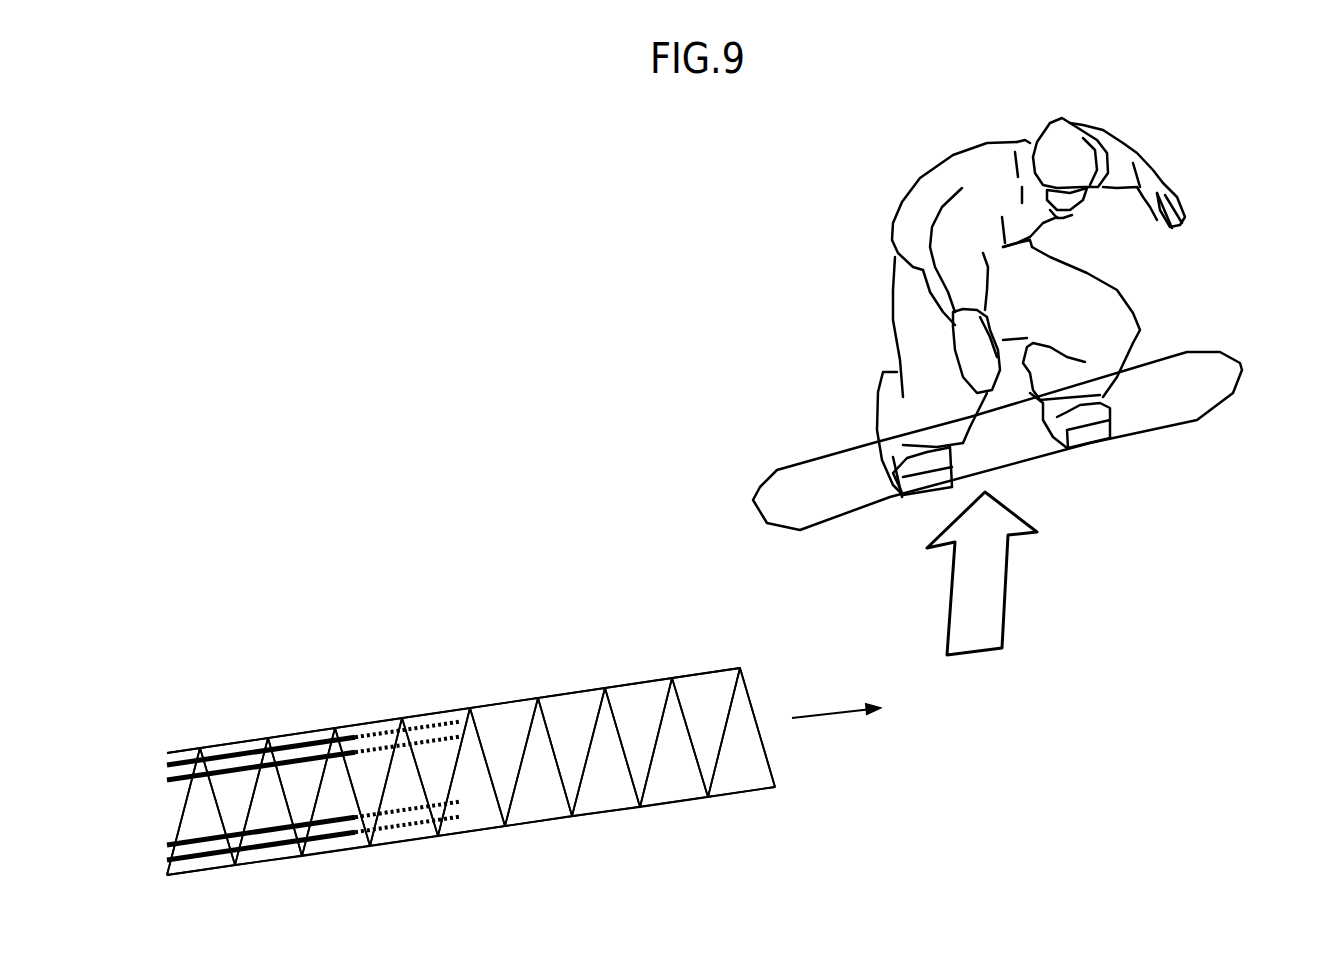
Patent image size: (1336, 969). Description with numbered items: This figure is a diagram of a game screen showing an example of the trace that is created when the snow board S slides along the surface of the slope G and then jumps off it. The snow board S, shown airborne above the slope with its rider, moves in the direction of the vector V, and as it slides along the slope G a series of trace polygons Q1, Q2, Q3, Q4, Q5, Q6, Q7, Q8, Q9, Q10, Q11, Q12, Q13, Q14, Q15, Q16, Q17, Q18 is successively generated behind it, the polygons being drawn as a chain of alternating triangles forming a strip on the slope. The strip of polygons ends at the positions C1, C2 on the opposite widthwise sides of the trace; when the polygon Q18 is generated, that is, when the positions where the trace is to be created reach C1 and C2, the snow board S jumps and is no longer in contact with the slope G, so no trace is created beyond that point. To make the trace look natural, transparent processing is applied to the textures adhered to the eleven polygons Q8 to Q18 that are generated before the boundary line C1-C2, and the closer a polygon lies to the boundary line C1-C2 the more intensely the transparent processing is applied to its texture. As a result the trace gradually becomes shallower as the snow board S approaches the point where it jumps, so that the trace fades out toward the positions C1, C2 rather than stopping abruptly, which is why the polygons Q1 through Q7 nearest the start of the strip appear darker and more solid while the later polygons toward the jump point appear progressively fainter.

The polygon Q1 is at (178, 811).
The polygon Q2 is at (201, 811).
The polygon Q3 is at (234, 801).
The polygon Q4 is at (268, 801).
The polygon Q5 is at (301, 792).
The polygon Q6 is at (336, 792).
The polygon Q7 is at (368, 782).
The polygon Q8 is at (404, 782).
The polygon Q9 is at (436, 772).
The polygon Q10 is at (471, 772).
The polygon Q11 is at (504, 762).
The polygon Q12 is at (538, 762).
The polygon Q13 is at (571, 752).
The polygon Q14 is at (606, 752).
The polygon Q15 is at (638, 742).
The polygon Q16 is at (674, 742).
The polygon Q17 is at (706, 732).
The polygon Q18 is at (741, 732).
The position at widthwise side C1 is at (740, 665).
The position at widthwise side C2 is at (777, 788).
The vector V is at (847, 707).
The slope G is at (980, 762).
The snow board S is at (1242, 378).